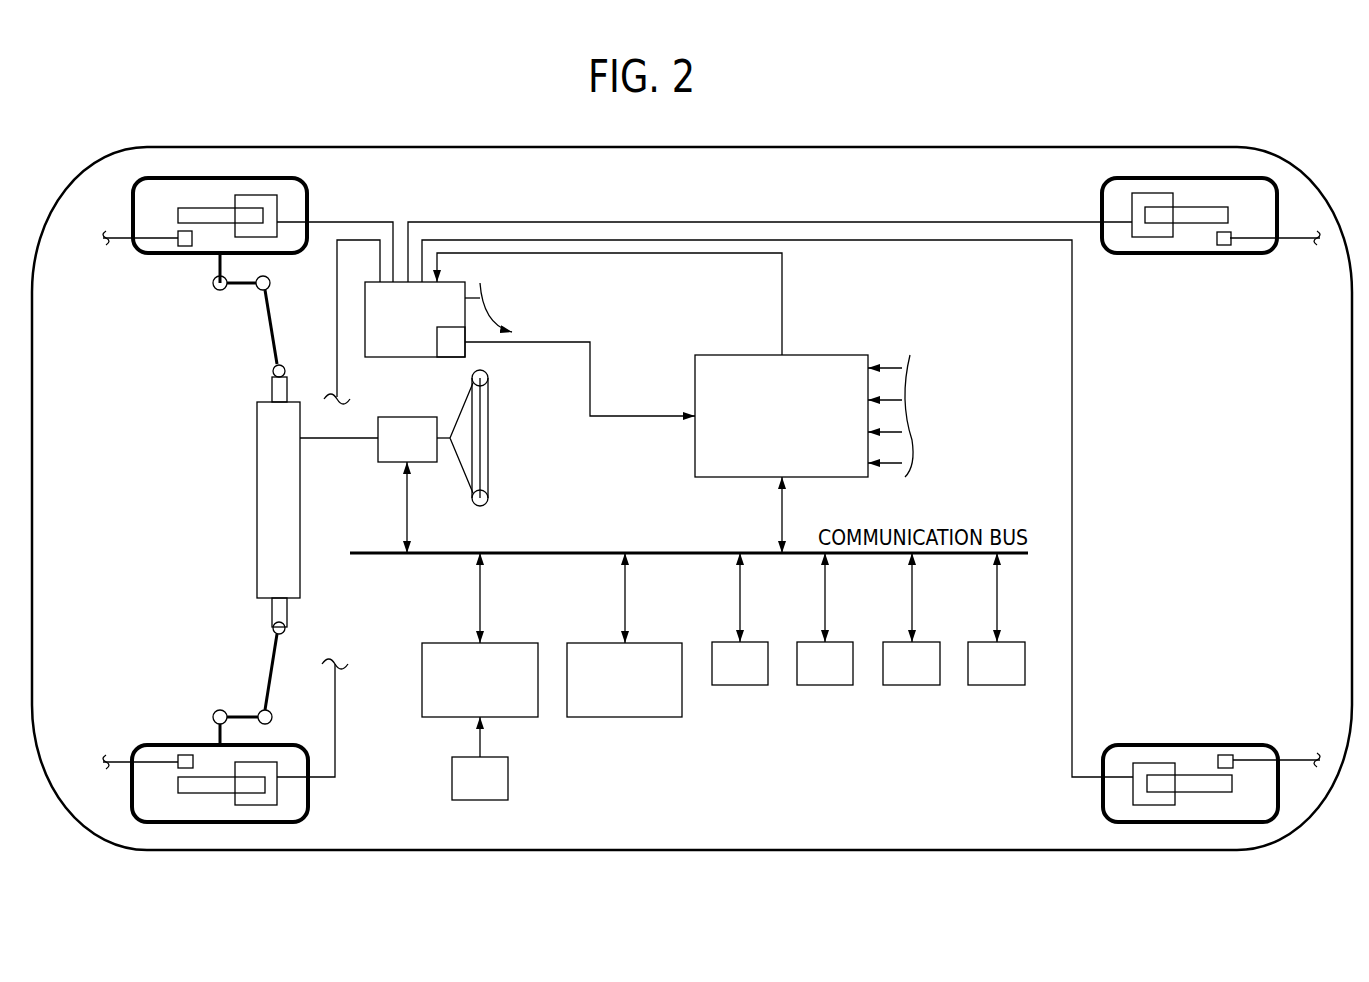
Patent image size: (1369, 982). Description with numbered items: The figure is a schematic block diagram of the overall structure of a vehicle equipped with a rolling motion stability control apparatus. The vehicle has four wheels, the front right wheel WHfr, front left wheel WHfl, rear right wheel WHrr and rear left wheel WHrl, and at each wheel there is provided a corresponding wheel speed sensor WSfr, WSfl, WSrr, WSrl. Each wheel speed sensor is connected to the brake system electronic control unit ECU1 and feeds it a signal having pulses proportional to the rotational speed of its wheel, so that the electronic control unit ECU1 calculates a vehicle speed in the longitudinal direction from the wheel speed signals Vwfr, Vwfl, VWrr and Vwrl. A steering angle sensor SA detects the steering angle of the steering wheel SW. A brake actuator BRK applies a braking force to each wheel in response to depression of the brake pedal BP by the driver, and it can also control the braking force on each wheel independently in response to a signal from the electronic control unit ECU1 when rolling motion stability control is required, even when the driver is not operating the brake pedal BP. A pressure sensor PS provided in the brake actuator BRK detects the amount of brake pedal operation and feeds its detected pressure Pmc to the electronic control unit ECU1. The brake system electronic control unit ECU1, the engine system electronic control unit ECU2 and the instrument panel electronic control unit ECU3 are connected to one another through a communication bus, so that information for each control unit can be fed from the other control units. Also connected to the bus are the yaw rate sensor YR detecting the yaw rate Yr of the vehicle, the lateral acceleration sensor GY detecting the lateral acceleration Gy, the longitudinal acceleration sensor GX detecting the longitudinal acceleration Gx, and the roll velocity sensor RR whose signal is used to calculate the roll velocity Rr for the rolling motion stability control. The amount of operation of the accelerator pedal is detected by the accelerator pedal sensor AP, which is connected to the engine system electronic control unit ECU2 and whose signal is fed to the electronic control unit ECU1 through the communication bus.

The front right wheel WHfr is at (248, 216).
The front left wheel WHfl is at (225, 755).
The rear right wheel WHrr is at (864, 217).
The rear left wheel WHrl is at (871, 544).
The front right wheel speed sensor WSfr is at (188, 247).
The front left wheel speed sensor WSfl is at (188, 757).
The rear right wheel speed sensor WSrr is at (1222, 245).
The rear left wheel speed sensor WSrl is at (1223, 755).
The brake actuator BRK is at (394, 322).
The pressure sensor PS is at (450, 354).
The brake pedal BP is at (492, 310).
The steering angle sensor SA is at (407, 439).
The steering wheel SW is at (490, 458).
The detected pressure Pmc is at (580, 379).
The brake system electronic control unit ECU1 is at (652, 403).
The engine system electronic control unit ECU2 is at (480, 635).
The instrument panel electronic control unit ECU3 is at (624, 635).
The accelerator pedal sensor AP is at (480, 758).
The yaw rate sensor YR is at (740, 619).
The lateral acceleration sensor GY is at (825, 619).
The longitudinal acceleration sensor GX is at (911, 619).
The roll velocity sensor RR is at (996, 619).
The yaw rate Yr is at (761, 599).
The vehicle lateral acceleration Gy is at (852, 599).
The vehicle longitudinal acceleration Gx is at (937, 599).
The roll velocity Rr is at (1020, 599).
The front right wheel speed signal Vwfr is at (923, 363).
The front left wheel speed signal Vwfl is at (921, 399).
The rear right wheel speed signal VWrr is at (925, 435).
The rear left wheel speed signal Vwrl is at (922, 470).